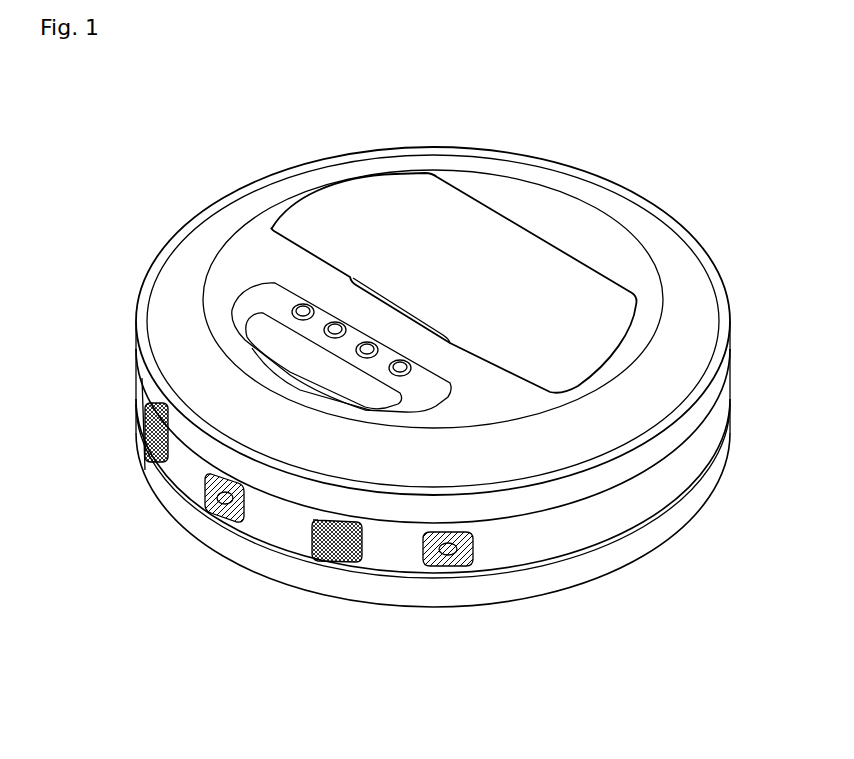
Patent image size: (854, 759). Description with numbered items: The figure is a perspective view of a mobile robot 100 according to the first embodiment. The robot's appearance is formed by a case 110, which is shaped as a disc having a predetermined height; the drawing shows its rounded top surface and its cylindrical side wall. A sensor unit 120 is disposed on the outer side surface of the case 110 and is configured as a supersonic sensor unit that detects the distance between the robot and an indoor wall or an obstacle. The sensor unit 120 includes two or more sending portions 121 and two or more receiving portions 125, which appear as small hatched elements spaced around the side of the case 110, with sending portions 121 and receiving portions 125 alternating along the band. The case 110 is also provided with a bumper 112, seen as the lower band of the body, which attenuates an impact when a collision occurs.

The mobile robot 100 is at (133, 181).
The case 110 is at (643, 458).
The bumper 112 is at (605, 531).
The sensor unit 120 is at (407, 733).
The sending portions 121 is at (153, 447).
The receiving portions 125 is at (220, 510).